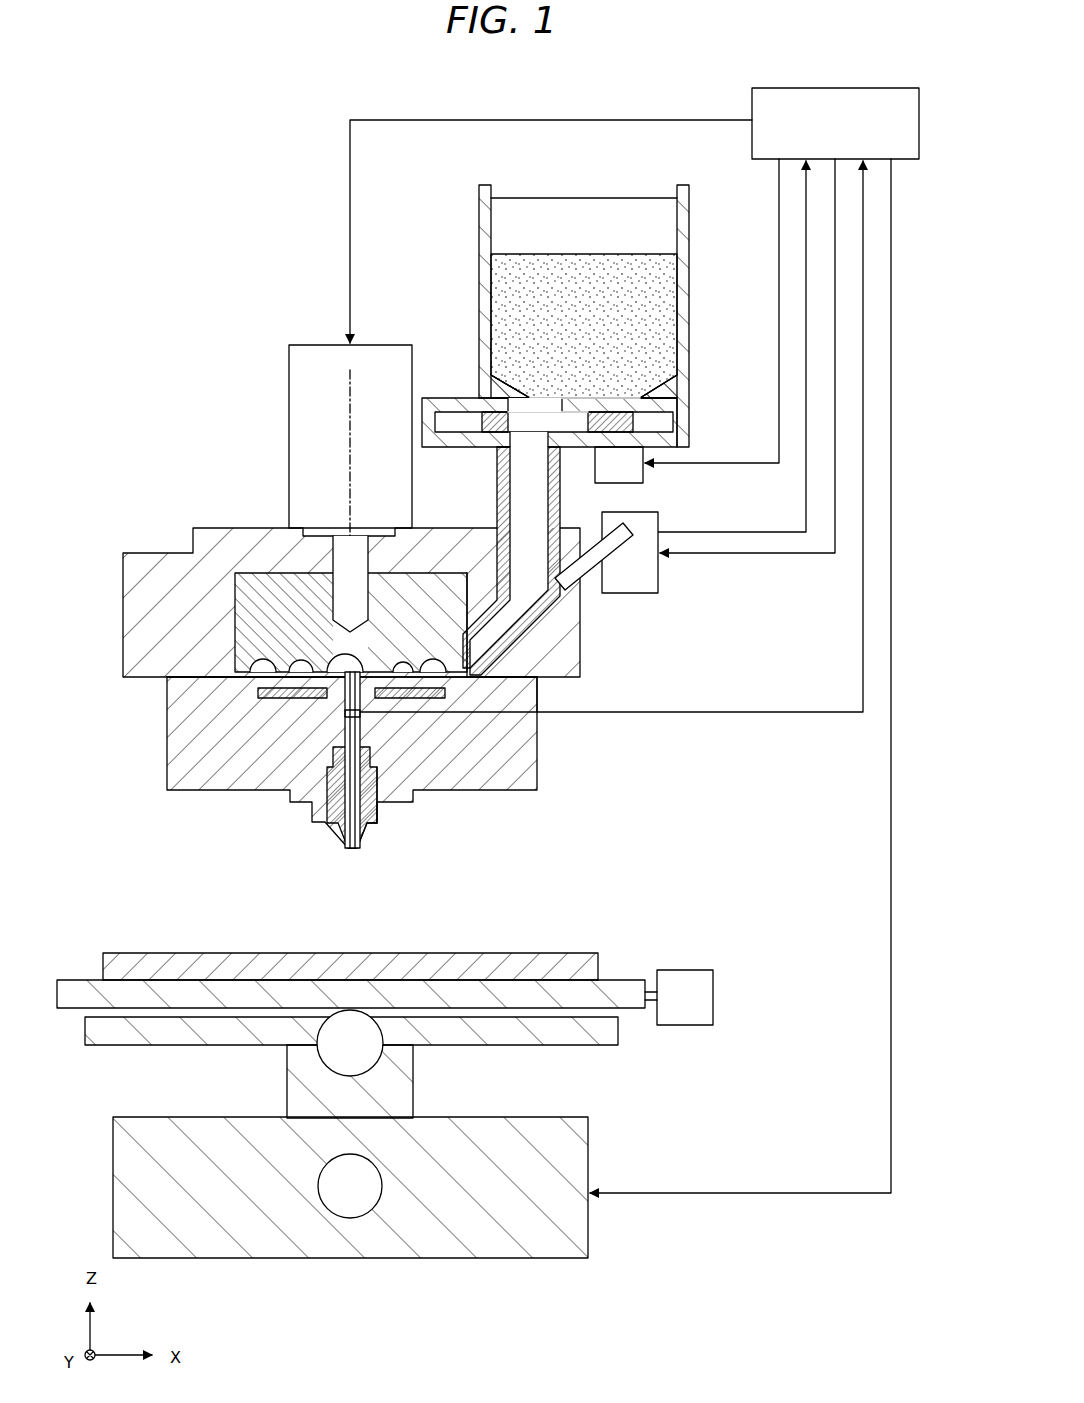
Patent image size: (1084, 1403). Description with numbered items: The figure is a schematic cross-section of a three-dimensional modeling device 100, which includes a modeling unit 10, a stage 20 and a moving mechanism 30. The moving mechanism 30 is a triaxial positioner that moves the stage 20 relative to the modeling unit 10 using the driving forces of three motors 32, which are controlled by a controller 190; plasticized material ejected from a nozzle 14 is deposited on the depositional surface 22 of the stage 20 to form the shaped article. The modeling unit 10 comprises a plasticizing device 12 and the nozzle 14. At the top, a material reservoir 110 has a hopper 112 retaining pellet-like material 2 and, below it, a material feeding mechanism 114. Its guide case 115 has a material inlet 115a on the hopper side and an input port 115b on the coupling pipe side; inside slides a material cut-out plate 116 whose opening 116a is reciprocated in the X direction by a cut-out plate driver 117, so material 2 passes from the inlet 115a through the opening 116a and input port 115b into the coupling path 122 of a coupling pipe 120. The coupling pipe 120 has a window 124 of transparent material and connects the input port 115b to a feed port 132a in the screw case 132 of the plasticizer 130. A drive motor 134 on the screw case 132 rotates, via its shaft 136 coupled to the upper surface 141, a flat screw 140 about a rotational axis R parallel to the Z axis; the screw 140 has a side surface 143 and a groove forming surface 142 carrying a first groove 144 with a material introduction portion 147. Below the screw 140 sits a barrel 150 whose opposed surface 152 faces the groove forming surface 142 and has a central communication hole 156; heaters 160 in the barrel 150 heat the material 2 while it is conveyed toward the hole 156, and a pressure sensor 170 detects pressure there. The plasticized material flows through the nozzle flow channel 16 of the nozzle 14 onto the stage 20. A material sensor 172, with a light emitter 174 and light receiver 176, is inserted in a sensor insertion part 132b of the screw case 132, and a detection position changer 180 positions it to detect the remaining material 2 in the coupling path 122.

The three-dimensional modeling device 100 is at (646, 617).
The controller 190 is at (752, 108).
The modeling unit 10 is at (586, 461).
The material reservoir 110 is at (619, 316).
The hopper 112 is at (684, 291).
The material 2 is at (640, 324).
The material feeding mechanism 114 is at (668, 447).
The guide case 115 is at (584, 316).
The material inlet 115a is at (658, 396).
The input port 115b is at (500, 455).
The material cut-out plate 116 is at (618, 296).
The opening 116a is at (513, 398).
The cut-out plate driver 117 is at (645, 476).
The plasticizing device 12 is at (305, 466).
The drive motor 134 is at (330, 478).
The rotational axis R is at (308, 346).
The plasticizer 130 is at (346, 677).
The screw case 132 is at (324, 680).
The feed port 132a is at (467, 678).
The sensor insertion part 132b is at (561, 694).
The screw 140 is at (267, 580).
The upper surface 141 is at (287, 556).
The side surface 143 is at (237, 624).
The opposed surface 152 is at (228, 650).
The shaft 136 is at (328, 552).
The coupling pipe 120 is at (528, 561).
The coupling path 122 is at (530, 520).
The window 124 is at (565, 560).
The barrel 150 is at (300, 762).
The communication hole 156 is at (285, 750).
The groove forming surface 142 is at (258, 693).
The heaters 160 is at (405, 700).
The material introduction portion 147 is at (472, 660).
The nozzle 14 is at (339, 827).
The first groove 144 is at (380, 812).
The nozzle flow channel 16 is at (276, 760).
The pressure sensor 170 is at (276, 760).
The detection position changer 180 is at (648, 572).
The material sensor 172 is at (640, 560).
The light emitter 174 is at (621, 583).
The light receiver 176 is at (600, 558).
The moving mechanism 30 is at (385, 1073).
The stage 20 is at (550, 975).
The depositional surface 22 is at (405, 954).
The motors 32 is at (680, 990).